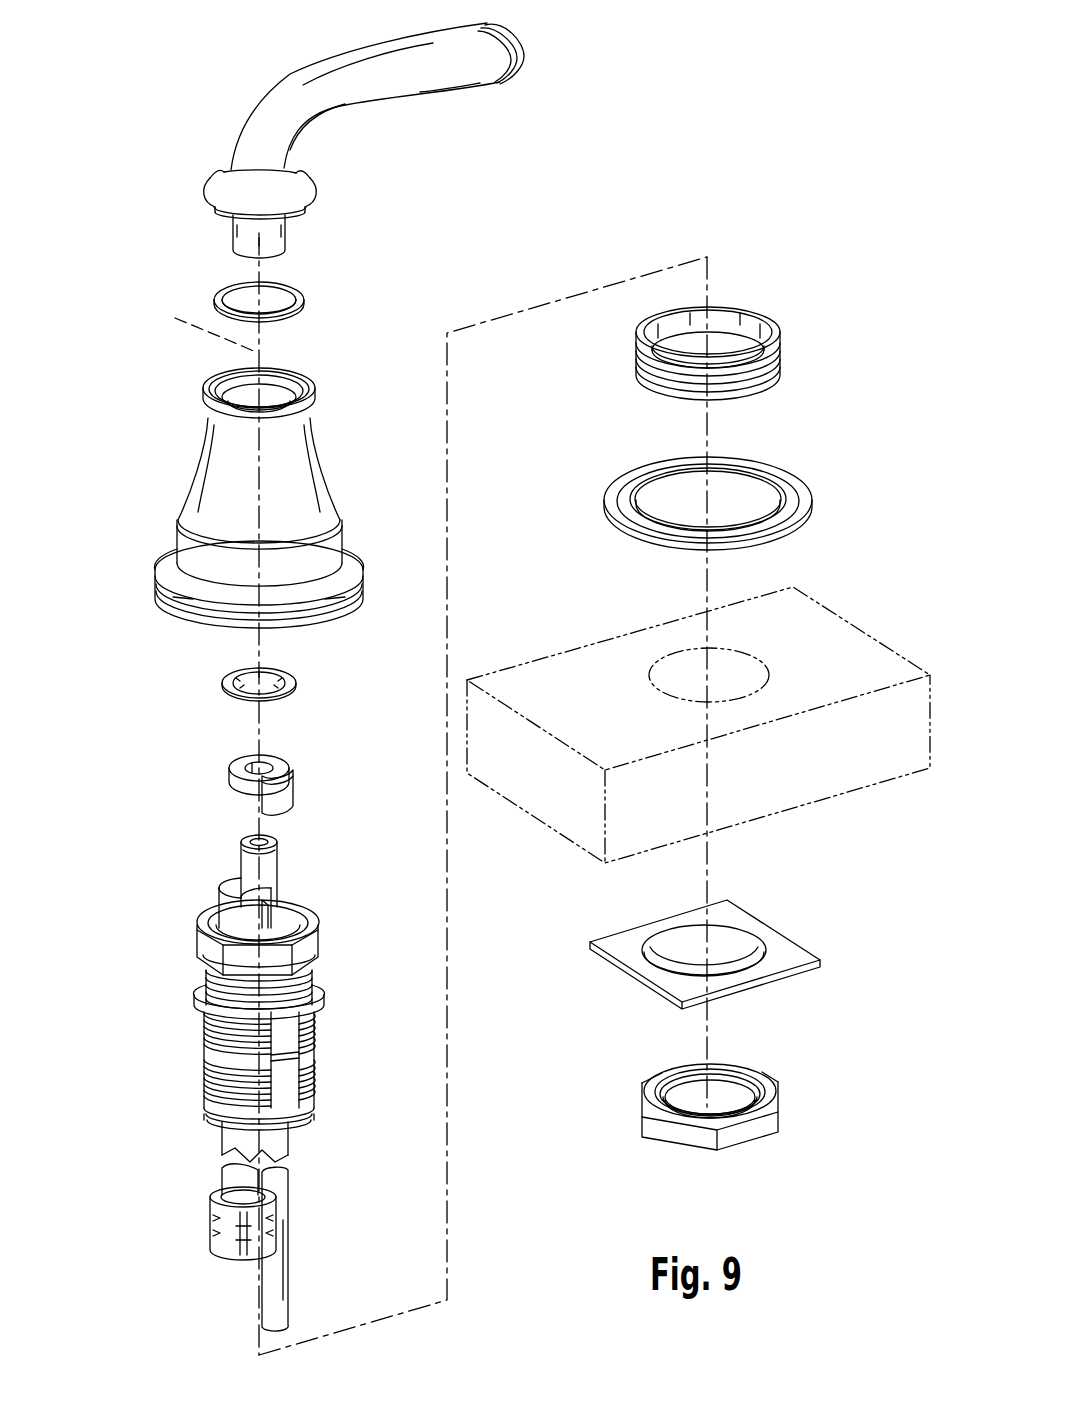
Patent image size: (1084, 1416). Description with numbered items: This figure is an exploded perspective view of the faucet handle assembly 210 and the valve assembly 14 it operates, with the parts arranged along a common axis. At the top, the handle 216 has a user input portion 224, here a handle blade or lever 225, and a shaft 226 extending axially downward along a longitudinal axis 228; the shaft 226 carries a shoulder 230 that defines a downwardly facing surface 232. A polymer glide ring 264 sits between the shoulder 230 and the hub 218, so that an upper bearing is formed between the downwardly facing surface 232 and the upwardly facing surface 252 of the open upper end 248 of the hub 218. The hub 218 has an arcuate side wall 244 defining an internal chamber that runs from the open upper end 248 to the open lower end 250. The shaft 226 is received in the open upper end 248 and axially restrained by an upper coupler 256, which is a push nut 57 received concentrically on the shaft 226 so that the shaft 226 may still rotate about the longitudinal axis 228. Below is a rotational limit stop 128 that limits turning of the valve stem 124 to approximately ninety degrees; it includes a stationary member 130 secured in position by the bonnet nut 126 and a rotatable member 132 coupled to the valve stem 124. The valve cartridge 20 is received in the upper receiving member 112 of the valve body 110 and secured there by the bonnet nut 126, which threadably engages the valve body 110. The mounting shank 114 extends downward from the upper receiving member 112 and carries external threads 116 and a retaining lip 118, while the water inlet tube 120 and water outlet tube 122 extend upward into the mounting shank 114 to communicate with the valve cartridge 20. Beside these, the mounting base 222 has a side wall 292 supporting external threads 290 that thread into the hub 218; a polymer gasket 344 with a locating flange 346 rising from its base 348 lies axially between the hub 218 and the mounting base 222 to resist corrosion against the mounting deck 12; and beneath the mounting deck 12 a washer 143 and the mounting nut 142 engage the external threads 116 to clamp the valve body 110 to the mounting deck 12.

The faucet handle assembly 210 is at (801, 148).
The handle 216 is at (292, 58).
The user input portion 224 is at (450, 38).
The handle blade or lever 225 is at (520, 55).
The shoulder 230 is at (215, 181).
The downwardly facing surface 232 is at (307, 217).
The shaft 226 is at (237, 228).
The glide ring 264 is at (298, 300).
The longitudinal axis 228 is at (192, 325).
The hub 218 is at (185, 465).
The open upper end 248 is at (195, 392).
The upwardly facing surface 252 is at (295, 383).
The side wall 244 is at (310, 458).
The open lower end 250 is at (172, 616).
The upper coupler 256 is at (297, 662).
The push nut 57 is at (298, 678).
The rotational limit stop 128 is at (214, 765).
The second or rotatable member 132 is at (288, 800).
The valve cartridge 20 is at (302, 903).
The valve stem 124 is at (240, 862).
The first or stationary member 130 is at (225, 910).
The bonnet nut 126 is at (213, 948).
The valve assembly 14 is at (183, 1042).
The upper receiving member 112 is at (310, 987).
The retaining lip 118 is at (205, 990).
The valve body 110 is at (317, 1033).
The external threads 116 is at (210, 1070).
The mounting shank 114 is at (305, 1083).
The water inlet tube 120 is at (230, 1180).
The water outlet tube 122 is at (282, 1310).
The mounting base 222 is at (798, 326).
The side wall 292 is at (755, 310).
The external threads 290 is at (640, 360).
The gasket 344 is at (606, 520).
The locating flange 346 is at (755, 460).
The base 348 is at (800, 480).
The mounting deck 12 is at (818, 643).
The washer 143 is at (783, 937).
The mounting nut 142 is at (778, 1098).